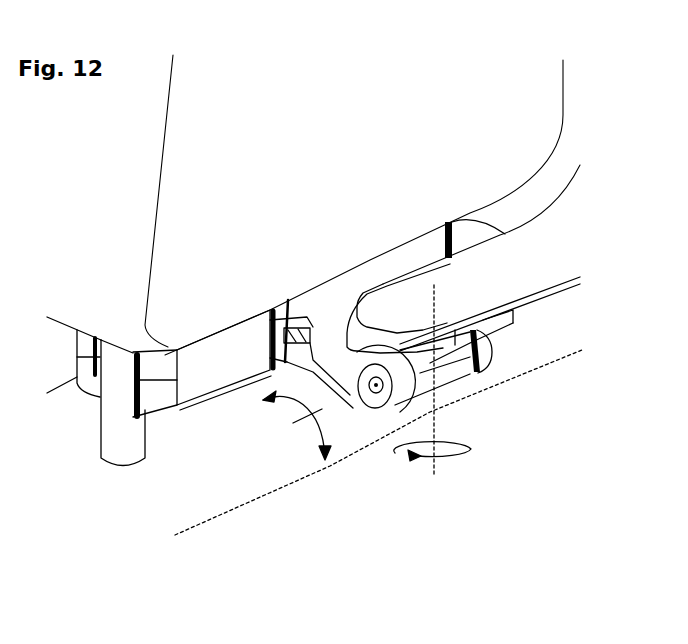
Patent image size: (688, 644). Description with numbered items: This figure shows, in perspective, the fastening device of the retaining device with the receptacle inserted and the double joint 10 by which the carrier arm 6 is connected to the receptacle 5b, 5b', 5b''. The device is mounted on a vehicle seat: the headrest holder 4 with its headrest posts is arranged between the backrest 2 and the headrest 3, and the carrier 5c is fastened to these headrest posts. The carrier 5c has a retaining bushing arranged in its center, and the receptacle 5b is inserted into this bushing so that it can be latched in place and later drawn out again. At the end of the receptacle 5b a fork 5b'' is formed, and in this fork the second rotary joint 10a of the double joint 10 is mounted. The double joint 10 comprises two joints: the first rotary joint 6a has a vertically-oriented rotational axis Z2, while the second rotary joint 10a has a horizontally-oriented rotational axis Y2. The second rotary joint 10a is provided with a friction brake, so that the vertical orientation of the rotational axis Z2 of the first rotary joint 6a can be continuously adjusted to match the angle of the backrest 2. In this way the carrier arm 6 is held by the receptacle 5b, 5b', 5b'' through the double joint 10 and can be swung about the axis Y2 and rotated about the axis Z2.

The backrest 2 is at (187, 503).
The headrest 3 is at (543, 110).
The headrest holder 4 is at (120, 437).
The receptacle 5b is at (311, 293).
The receptacle 5b' is at (398, 266).
The receptacle (fork) 5b'' is at (521, 363).
The carrier 5c is at (210, 360).
The carrier arm 6 is at (543, 263).
The first rotary joint 6a is at (473, 331).
The double joint 10 is at (453, 373).
The second rotary joint 10a is at (378, 385).
The rotational axis Y2 is at (297, 430).
The rotational axis Z2 is at (432, 393).